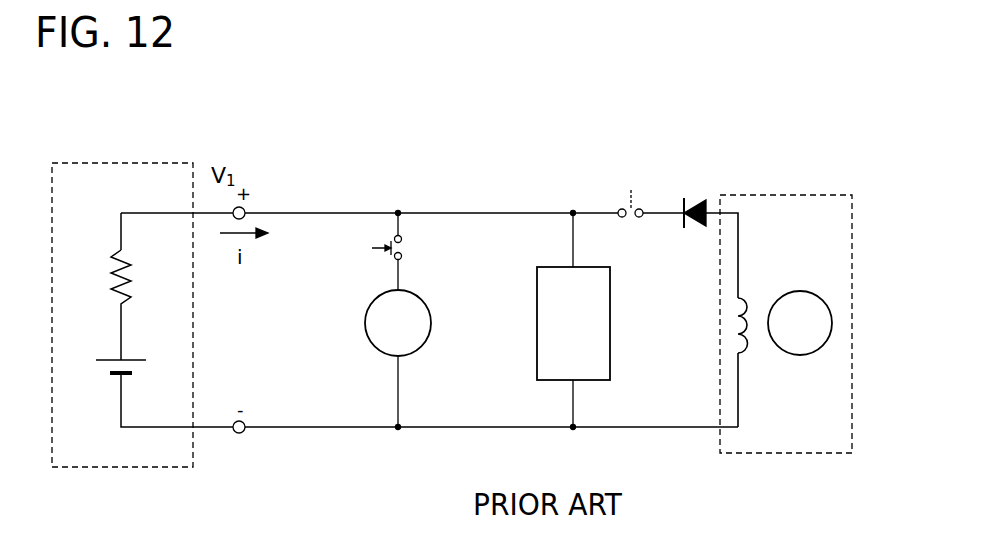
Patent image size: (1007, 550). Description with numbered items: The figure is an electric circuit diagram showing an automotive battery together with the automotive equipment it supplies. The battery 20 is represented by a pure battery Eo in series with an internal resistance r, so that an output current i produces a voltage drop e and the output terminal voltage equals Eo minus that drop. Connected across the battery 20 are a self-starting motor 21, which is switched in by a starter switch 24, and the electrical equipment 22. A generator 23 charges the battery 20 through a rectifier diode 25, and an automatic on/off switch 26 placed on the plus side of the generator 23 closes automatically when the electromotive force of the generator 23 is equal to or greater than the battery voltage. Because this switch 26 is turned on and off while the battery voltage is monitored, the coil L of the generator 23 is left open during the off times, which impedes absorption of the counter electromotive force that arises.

The battery 20 is at (131, 162).
The self-starting motor 21 is at (369, 304).
The electrical equipment 22 is at (611, 327).
The generator 23 is at (786, 321).
The starter switch 24 is at (381, 237).
The rectifier diode 25 is at (698, 200).
The automatic on/off switch 26 is at (623, 205).
The coil L is at (748, 348).